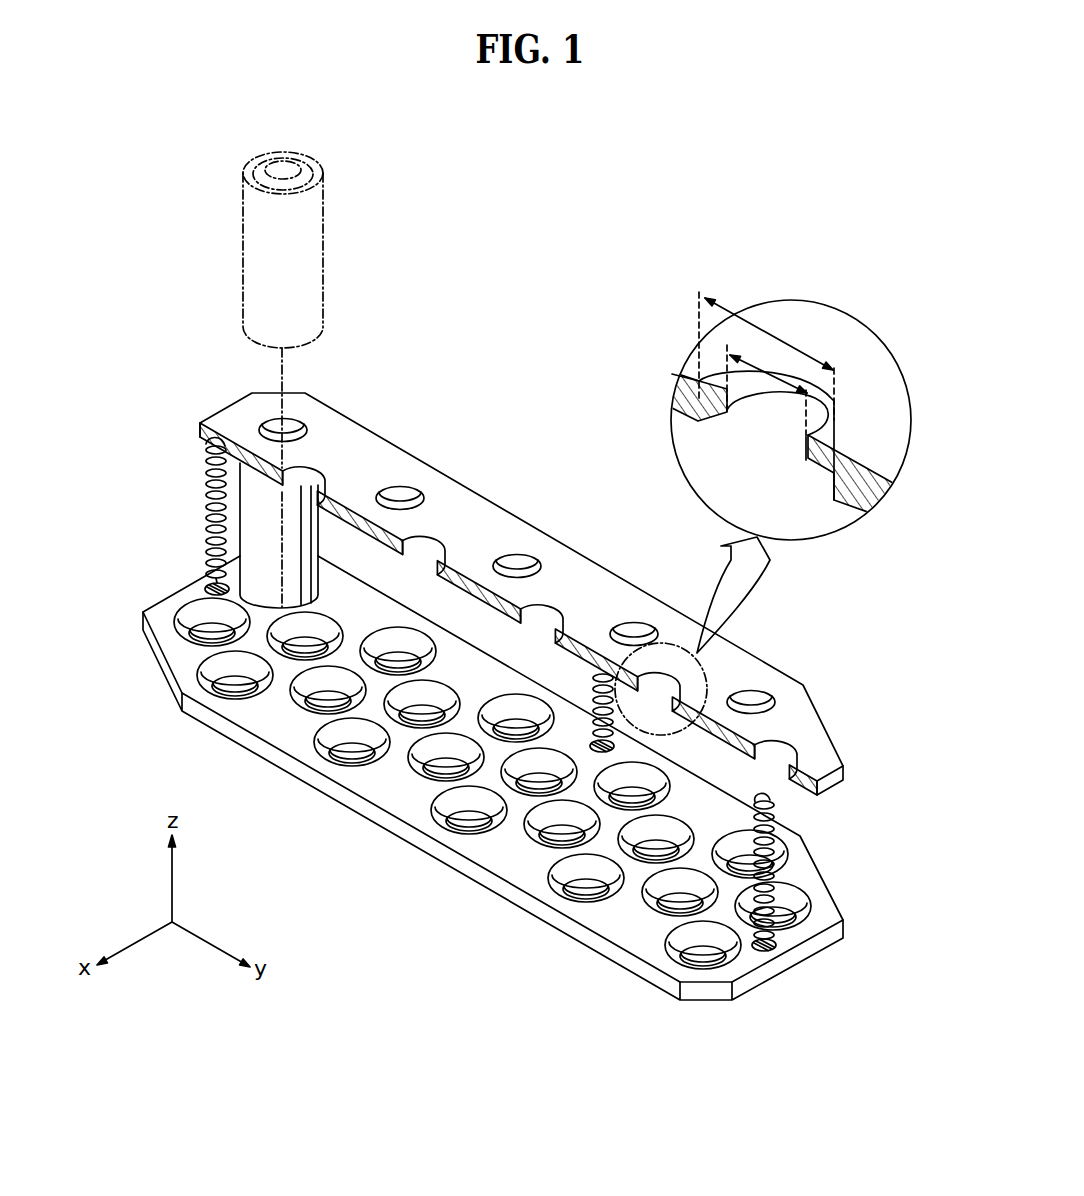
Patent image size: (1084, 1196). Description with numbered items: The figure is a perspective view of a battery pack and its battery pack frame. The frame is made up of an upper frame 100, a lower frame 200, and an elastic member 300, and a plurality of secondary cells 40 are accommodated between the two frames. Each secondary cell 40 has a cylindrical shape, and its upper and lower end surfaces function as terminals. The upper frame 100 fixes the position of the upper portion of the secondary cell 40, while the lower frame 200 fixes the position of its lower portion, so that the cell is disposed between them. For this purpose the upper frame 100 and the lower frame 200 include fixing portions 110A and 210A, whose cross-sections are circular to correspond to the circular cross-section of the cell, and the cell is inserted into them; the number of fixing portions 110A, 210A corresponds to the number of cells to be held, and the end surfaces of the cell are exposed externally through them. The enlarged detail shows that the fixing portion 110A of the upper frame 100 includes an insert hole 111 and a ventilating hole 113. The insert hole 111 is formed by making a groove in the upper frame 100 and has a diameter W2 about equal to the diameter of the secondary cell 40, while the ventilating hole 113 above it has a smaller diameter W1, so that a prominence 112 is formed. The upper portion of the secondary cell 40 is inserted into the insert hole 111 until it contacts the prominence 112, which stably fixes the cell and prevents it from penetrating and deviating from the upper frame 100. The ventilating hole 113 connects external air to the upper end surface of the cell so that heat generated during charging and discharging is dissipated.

The upper frame 100 is at (353, 437).
The fixing portion 110A is at (514, 557).
The secondary cell 40 is at (252, 518).
The elastic member 300 is at (223, 541).
The lower frame 200 is at (392, 822).
The fixing portion 210A is at (352, 760).
The insert hole 111 is at (768, 433).
The prominence 112 is at (697, 416).
The ventilating hole 113 is at (725, 388).
The diameter of ventilating hole W1 is at (768, 371).
The diameter of insert hole W2 is at (769, 334).